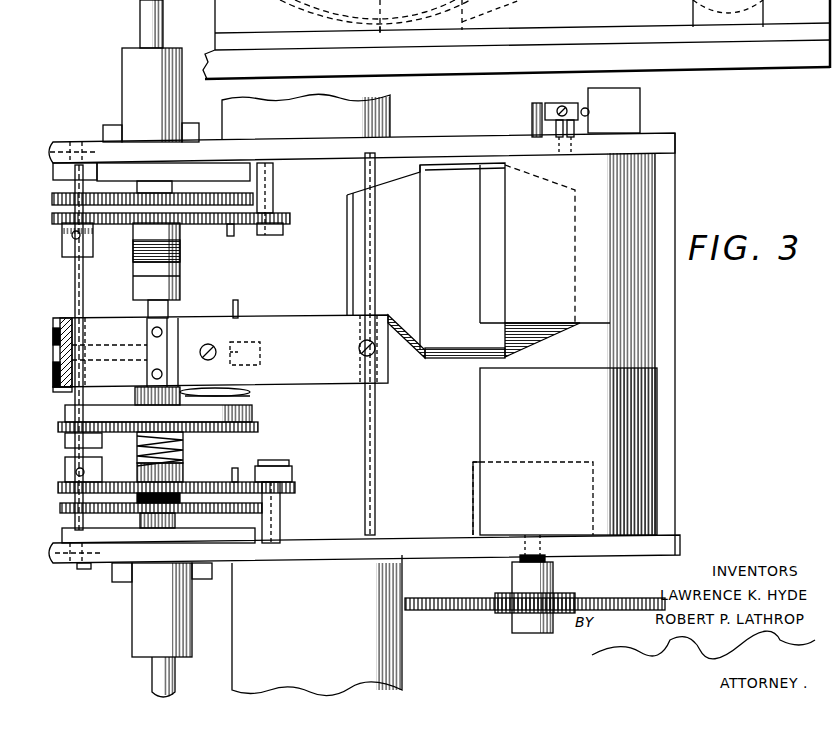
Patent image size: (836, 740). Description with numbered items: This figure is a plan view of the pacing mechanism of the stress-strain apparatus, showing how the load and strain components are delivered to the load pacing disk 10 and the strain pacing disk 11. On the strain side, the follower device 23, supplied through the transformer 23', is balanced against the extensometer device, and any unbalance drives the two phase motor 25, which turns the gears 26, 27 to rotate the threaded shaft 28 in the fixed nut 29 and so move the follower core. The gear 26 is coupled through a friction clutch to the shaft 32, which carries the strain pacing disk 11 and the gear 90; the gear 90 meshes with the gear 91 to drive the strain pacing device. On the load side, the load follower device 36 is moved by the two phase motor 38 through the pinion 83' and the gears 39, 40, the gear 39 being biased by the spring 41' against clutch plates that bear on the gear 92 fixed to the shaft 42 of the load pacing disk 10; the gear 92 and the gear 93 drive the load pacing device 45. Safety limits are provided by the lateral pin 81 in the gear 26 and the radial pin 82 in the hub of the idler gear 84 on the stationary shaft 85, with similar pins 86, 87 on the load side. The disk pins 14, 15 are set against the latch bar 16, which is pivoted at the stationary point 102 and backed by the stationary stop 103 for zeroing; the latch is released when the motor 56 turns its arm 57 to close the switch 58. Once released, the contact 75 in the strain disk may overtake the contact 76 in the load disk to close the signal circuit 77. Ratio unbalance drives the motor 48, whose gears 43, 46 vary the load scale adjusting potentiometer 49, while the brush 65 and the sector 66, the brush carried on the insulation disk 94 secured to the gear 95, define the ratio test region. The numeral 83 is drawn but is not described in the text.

The load pacing disk 10 is at (215, 341).
The strain pacing disk 11 is at (173, 386).
The disk pin 14 is at (137, 374).
The disk pin 15 is at (137, 334).
The latch bar 16 is at (184, 337).
The electro-magnetic motion responsive follower device 23 is at (319, 329).
The transformer 23' is at (478, 260).
The two phase motor 25 is at (334, 625).
The gear 26 is at (176, 469).
The gear 27 is at (173, 457).
The threaded shaft 28 is at (161, 527).
The fixed nut 29 is at (158, 534).
The shaft 32 is at (131, 677).
The load follower device 36 is at (142, 95).
The two phase motor 38 is at (293, 114).
The gear 39 is at (152, 222).
The gear 40 is at (172, 270).
The spring 41' is at (137, 258).
The shaft 42 is at (130, 24).
The gear 43 is at (529, 584).
The load pacing device 45 is at (783, 6).
The gear 46 is at (535, 590).
The motor 48 is at (548, 451).
The load scale adjusting potentiometer 49 is at (511, 498).
The two phase motor 56 is at (659, 344).
The arm 57 is at (549, 116).
The switch 58 is at (600, 105).
The brush 65 is at (214, 397).
The sector 66 is at (253, 394).
The contact 75 is at (242, 367).
The contact 76 is at (238, 352).
The signal circuit 77 is at (250, 305).
The lateral pin 81 is at (246, 461).
The radial pin 82 is at (97, 448).
The gear hub 83 is at (297, 471).
The pinion 83' is at (277, 210).
The idler gear 84 is at (99, 470).
The stationary shaft 85 is at (60, 347).
The stop pin 86 is at (171, 234).
The stop pin 87 is at (91, 240).
The gear 90 is at (292, 512).
The gear 91 is at (364, 567).
The gear 92 is at (362, 163).
The gear 93 is at (76, 158).
The disk of insulation 94 is at (183, 417).
The gear 95 is at (177, 437).
The stationary pivot point 102 is at (390, 344).
The stationary stop 103 is at (111, 339).